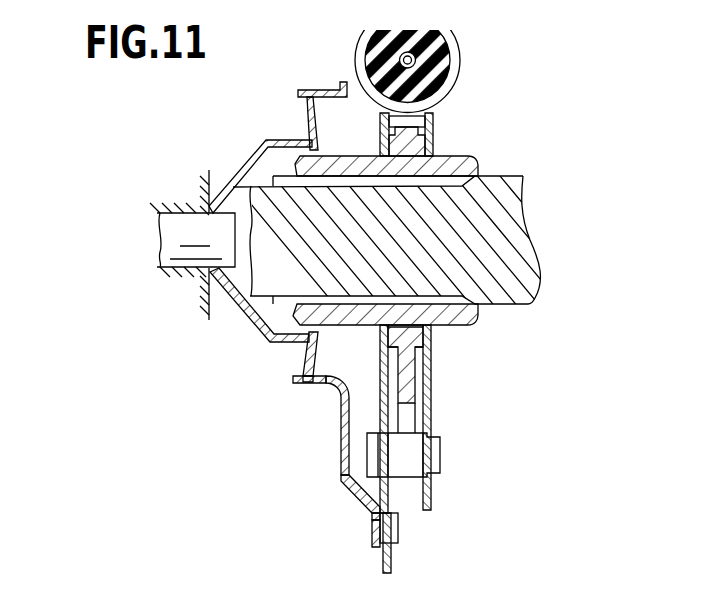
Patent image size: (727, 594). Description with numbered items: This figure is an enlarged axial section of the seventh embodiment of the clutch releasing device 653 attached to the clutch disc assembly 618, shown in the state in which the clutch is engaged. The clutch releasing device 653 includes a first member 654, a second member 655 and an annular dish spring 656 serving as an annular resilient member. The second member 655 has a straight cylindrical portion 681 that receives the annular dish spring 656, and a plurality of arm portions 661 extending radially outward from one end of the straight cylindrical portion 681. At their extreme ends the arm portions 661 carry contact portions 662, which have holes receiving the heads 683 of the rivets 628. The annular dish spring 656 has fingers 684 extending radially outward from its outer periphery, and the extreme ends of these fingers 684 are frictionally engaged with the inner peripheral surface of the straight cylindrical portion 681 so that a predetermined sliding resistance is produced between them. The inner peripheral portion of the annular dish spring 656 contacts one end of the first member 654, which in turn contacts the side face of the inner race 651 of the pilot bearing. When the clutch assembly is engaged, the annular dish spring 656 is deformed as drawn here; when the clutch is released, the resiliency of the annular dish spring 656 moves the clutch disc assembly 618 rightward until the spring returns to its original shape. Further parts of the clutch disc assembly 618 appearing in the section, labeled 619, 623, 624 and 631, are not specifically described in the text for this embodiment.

The clutch disc assembly 618 is at (443, 333).
The upper bearing ring 619 is at (440, 156).
The bolt 623 is at (384, 373).
The nut 624 is at (433, 408).
The rivet 628 is at (392, 528).
The roller 631 is at (422, 73).
The inner race of the pilot bearing 651 is at (200, 208).
The clutch releasing device 653 is at (266, 139).
The first member 654 is at (250, 321).
The second member 655 is at (339, 443).
The annular dish spring 656 is at (309, 358).
The arm portion 661 is at (342, 486).
The contact portion 662 is at (374, 515).
The straight cylindrical portion 681 is at (308, 386).
The head of the rivet 683 is at (372, 531).
The finger 684 is at (303, 378).